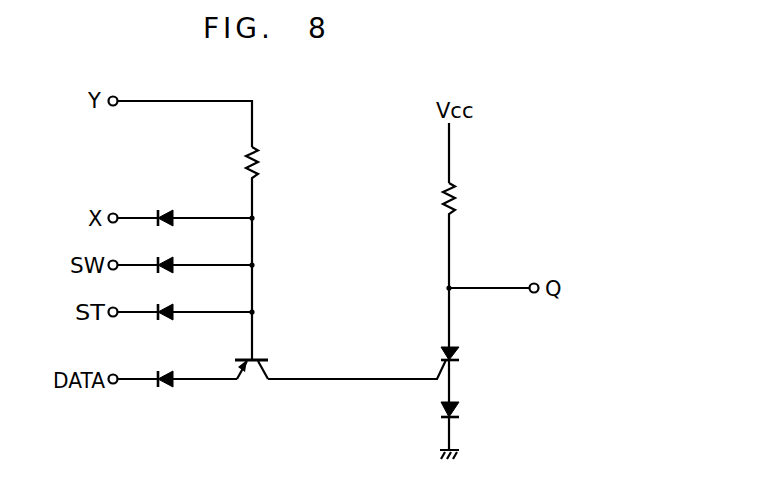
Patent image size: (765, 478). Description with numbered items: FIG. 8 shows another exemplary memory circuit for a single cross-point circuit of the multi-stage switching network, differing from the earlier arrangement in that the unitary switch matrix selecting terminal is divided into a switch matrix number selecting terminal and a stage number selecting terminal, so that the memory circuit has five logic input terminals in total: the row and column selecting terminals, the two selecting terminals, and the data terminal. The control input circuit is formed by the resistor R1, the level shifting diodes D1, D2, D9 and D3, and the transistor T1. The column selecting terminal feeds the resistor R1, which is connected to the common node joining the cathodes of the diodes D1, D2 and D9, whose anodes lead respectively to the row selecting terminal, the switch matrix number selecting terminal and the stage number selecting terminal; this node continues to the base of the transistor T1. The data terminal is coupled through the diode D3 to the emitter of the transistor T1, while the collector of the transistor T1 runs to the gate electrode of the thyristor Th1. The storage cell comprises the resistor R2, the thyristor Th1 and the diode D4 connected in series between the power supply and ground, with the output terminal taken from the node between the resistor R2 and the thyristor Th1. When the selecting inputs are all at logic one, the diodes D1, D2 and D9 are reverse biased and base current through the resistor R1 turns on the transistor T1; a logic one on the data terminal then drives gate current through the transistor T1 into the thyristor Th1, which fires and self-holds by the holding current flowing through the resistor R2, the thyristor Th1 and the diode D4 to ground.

The resistor R1 is at (259, 160).
The resistor R2 is at (456, 199).
The level shifting diode D1 is at (162, 208).
The level shifting diode D2 is at (169, 258).
The level shifting diode D9 is at (169, 306).
The level shifting diode D3 is at (160, 371).
The diode D4 is at (461, 410).
The transistor T1 is at (255, 368).
The thyristor Th1 is at (461, 353).